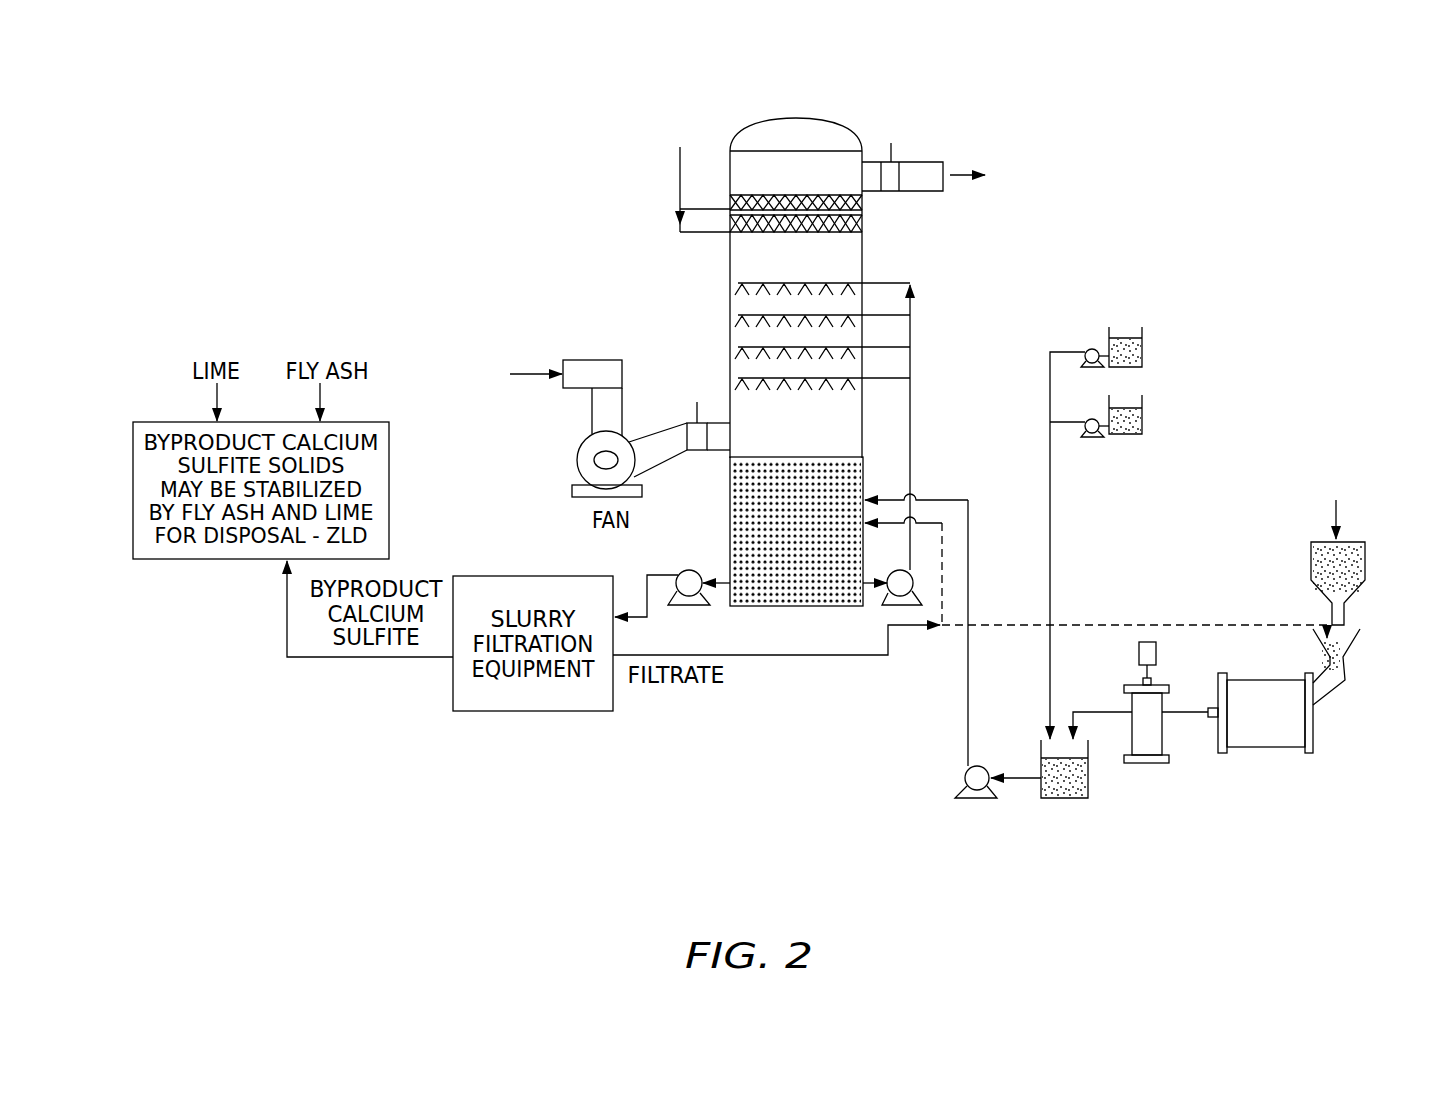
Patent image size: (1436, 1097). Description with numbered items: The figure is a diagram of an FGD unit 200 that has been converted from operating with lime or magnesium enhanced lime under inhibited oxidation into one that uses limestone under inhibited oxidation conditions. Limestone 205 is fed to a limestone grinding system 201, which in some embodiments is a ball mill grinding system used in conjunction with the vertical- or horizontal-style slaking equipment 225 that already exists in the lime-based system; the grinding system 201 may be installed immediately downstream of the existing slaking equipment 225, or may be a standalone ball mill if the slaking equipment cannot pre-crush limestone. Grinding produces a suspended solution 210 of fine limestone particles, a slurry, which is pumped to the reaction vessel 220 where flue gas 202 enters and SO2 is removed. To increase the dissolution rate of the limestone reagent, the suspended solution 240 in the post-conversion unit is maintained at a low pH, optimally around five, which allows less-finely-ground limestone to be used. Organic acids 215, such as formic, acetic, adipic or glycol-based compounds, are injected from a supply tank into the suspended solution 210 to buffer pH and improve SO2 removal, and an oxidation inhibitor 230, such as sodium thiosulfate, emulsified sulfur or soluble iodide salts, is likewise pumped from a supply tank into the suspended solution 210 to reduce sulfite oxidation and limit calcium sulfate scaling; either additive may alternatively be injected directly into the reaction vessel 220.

The unit 200 is at (632, 252).
The limestone grinding system 201 is at (1166, 702).
The flue gas 202 is at (448, 352).
The limestone 205 is at (1295, 500).
The suspended solution 210 is at (1068, 800).
The organic acids 215 is at (1128, 437).
The reaction vessel 220 is at (733, 553).
The slaking equipment 225 is at (1313, 727).
The oxidation inhibitor 230 is at (1120, 335).
The suspended solution 240 is at (733, 520).